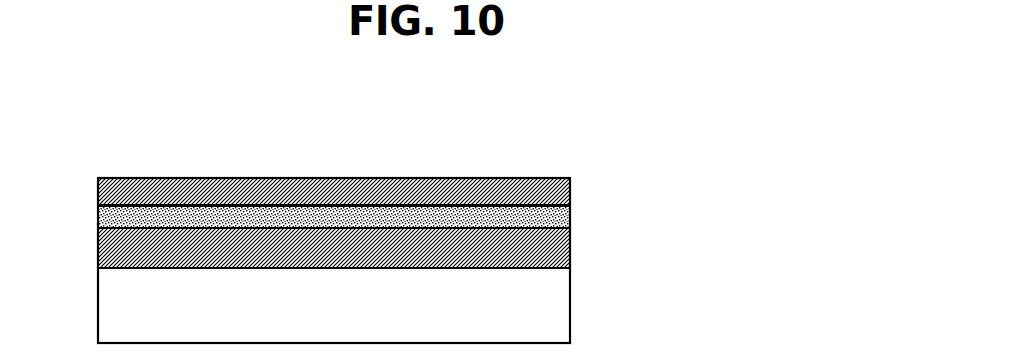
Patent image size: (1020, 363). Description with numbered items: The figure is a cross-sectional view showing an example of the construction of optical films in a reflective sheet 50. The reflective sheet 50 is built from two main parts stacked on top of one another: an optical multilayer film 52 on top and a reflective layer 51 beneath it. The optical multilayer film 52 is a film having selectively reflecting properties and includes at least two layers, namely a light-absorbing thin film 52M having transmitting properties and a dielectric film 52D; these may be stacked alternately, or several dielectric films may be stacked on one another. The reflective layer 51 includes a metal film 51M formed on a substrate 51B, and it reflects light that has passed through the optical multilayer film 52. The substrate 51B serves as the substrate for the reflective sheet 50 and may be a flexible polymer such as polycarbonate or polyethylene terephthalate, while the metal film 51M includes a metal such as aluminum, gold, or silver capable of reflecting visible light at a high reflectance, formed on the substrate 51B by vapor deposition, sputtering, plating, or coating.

The reflective sheet 50 is at (343, 139).
The optical multilayer film 52 is at (425, 181).
The light-absorbing thin film 52M is at (569, 187).
The dielectric film 52D is at (568, 223).
The reflective layer 51 is at (425, 279).
The metal film 51M is at (565, 260).
The substrate 51B is at (562, 317).